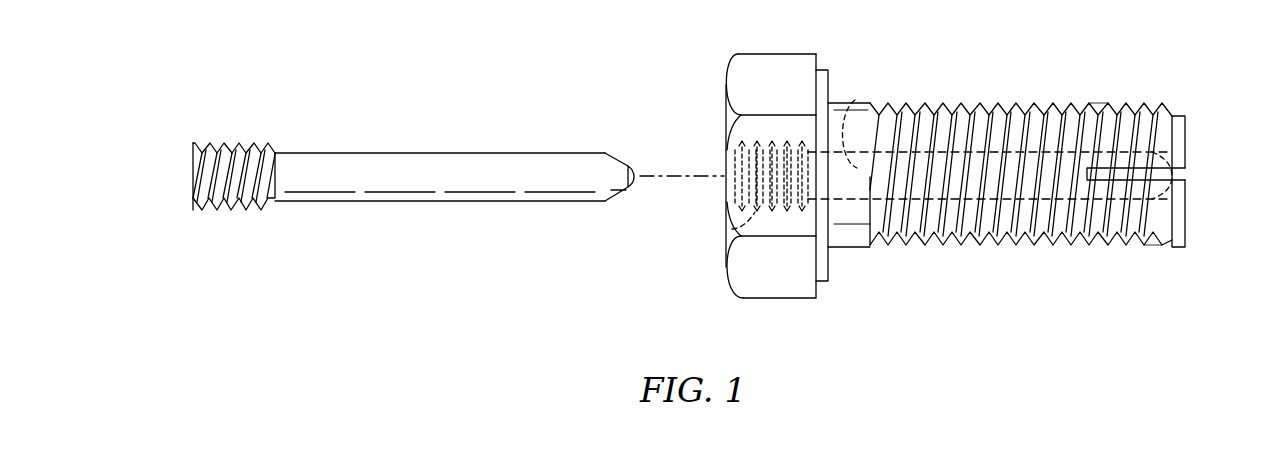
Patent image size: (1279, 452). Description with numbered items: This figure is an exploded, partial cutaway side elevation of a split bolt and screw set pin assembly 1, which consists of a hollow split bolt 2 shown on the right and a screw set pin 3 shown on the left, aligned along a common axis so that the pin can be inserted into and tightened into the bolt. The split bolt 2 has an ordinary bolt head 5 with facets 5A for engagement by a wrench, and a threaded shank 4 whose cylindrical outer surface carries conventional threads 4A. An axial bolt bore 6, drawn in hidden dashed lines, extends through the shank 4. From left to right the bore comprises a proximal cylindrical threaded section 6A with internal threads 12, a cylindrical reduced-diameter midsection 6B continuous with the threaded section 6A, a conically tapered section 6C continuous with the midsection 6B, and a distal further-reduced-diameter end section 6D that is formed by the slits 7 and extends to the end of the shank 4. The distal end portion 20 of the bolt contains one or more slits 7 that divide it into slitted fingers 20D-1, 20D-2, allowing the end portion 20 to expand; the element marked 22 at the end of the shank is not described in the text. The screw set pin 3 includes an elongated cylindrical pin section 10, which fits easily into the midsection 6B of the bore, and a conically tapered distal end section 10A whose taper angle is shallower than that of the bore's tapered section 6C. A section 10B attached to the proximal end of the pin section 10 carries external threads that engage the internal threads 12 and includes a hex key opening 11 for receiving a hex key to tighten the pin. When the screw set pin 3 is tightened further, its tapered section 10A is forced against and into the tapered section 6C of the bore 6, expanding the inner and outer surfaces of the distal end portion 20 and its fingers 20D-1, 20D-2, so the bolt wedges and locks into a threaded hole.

The split bolt and screw set pin assembly 1 is at (150, 98).
The hollow split bolt 2 is at (697, 274).
The screw set pin 3 is at (342, 117).
The threaded shank 4 is at (933, 254).
The threads 4A is at (1025, 247).
The bolt head 5 is at (792, 288).
The facets 5A is at (776, 63).
The bolt bore 6 is at (843, 203).
The proximal cylindrical threaded section 6A is at (730, 226).
The cylindrical reduced-diameter midsection 6B is at (855, 100).
The conically tapered section 6C is at (1168, 150).
The distal further-reduced-diameter end section 6D is at (1183, 173).
The slits 7 is at (1112, 172).
The pin section 10 is at (428, 153).
The conically tapered distal end section 10A is at (621, 156).
The section 10B is at (233, 143).
The hex key opening 11 is at (192, 172).
The internal threads 12 is at (728, 165).
The distal end portion 20 is at (1087, 37).
The slitted finger 20D-1 is at (1025, 103).
The slitted finger 20D-2 is at (1152, 246).
The end face 22 is at (1187, 207).